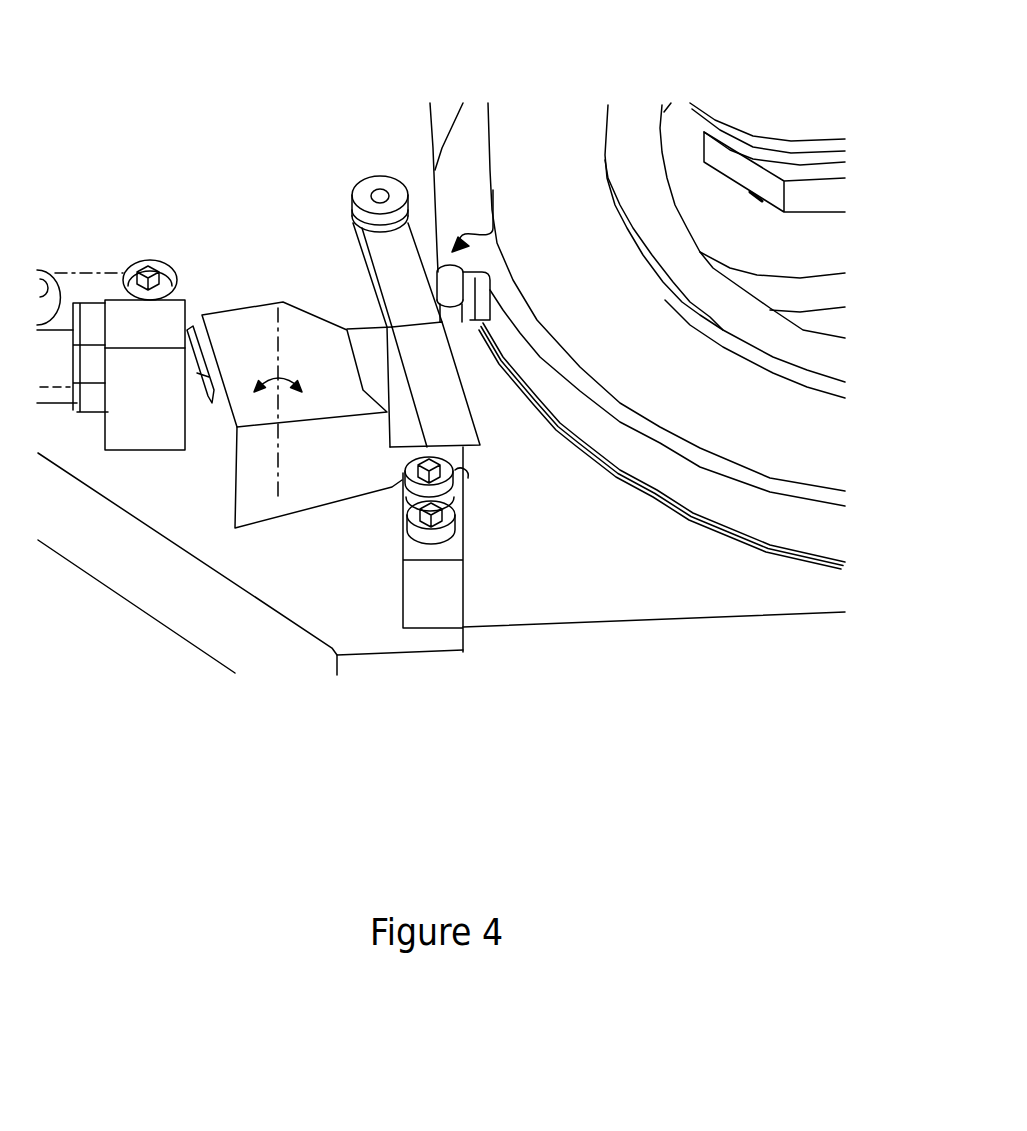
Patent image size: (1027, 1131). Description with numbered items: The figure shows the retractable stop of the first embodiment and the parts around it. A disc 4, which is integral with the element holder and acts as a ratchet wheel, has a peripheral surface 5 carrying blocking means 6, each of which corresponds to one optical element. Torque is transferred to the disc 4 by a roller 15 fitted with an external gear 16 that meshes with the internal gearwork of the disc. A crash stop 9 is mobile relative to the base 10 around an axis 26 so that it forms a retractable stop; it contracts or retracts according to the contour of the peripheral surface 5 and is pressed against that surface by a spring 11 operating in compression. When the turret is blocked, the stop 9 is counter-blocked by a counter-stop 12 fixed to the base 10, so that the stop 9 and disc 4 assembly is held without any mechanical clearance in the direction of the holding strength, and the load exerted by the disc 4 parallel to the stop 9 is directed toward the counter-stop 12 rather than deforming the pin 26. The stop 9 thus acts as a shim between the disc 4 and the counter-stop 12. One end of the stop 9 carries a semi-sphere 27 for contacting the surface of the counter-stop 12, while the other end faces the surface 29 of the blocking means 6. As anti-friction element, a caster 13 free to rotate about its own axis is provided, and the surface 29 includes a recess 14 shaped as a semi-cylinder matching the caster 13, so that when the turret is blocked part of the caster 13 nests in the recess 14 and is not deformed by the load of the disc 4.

The disc 4 is at (553, 118).
The peripheral surface 5 is at (695, 482).
The blocking means 6 is at (479, 204).
The crash stop 9 is at (384, 276).
The base 10 is at (230, 648).
The spring 11 is at (200, 413).
The counter-stop 12 is at (465, 567).
The caster 13 is at (360, 190).
The recess 14 is at (457, 279).
The roller 15 is at (677, 118).
The external gear 16 is at (773, 285).
The axis 26 is at (262, 320).
The semi-sphere 27 is at (465, 480).
The surface of the blocking means 29 is at (457, 315).